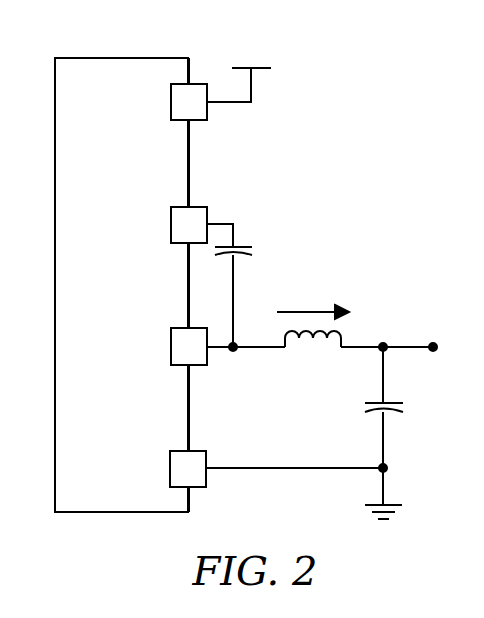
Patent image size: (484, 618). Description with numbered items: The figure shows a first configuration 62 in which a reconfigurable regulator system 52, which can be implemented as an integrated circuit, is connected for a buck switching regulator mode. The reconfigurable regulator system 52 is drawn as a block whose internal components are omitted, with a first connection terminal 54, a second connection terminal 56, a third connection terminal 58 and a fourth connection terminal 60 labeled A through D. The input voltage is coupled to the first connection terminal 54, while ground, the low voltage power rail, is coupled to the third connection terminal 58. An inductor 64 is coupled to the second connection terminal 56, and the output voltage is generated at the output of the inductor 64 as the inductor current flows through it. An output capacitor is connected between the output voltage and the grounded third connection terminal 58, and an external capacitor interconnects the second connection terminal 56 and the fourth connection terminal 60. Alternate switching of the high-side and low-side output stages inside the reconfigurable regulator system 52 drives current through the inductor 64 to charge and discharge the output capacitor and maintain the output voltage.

The reconfigurable regulator system 52 is at (91, 56).
The first connection terminal 54 is at (200, 120).
The second connection terminal 56 is at (200, 365).
The third connection terminal 58 is at (200, 451).
The fourth connection terminal 60 is at (200, 207).
The first configuration 62 is at (322, 68).
The inductor 64 is at (342, 332).